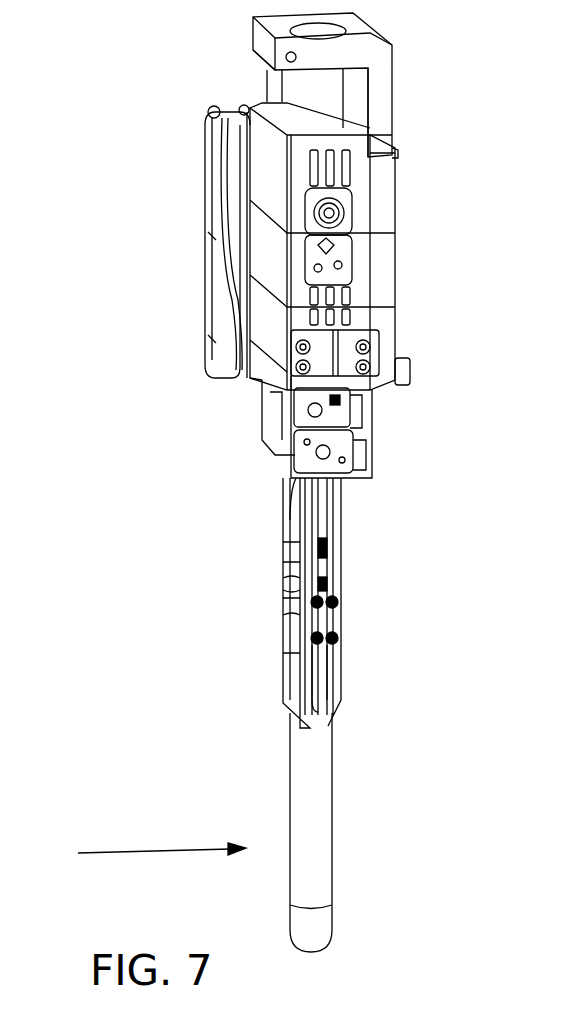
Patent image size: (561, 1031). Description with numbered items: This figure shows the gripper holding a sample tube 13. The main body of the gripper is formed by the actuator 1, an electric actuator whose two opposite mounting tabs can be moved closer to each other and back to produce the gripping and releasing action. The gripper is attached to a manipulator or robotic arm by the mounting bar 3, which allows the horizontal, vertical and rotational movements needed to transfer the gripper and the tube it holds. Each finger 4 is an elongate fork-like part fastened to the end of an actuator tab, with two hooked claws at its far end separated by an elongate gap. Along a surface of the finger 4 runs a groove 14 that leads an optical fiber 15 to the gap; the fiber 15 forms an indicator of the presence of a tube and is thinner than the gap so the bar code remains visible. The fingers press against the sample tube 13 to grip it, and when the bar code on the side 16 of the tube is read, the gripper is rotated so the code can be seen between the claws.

The actuator 1 is at (358, 184).
The mounting bar 3 is at (375, 70).
The finger 4 is at (288, 540).
The sample tube 13 is at (330, 875).
The groove 14 is at (327, 522).
The optical fiber 15 is at (340, 680).
The side of the sample tube 16 is at (138, 844).